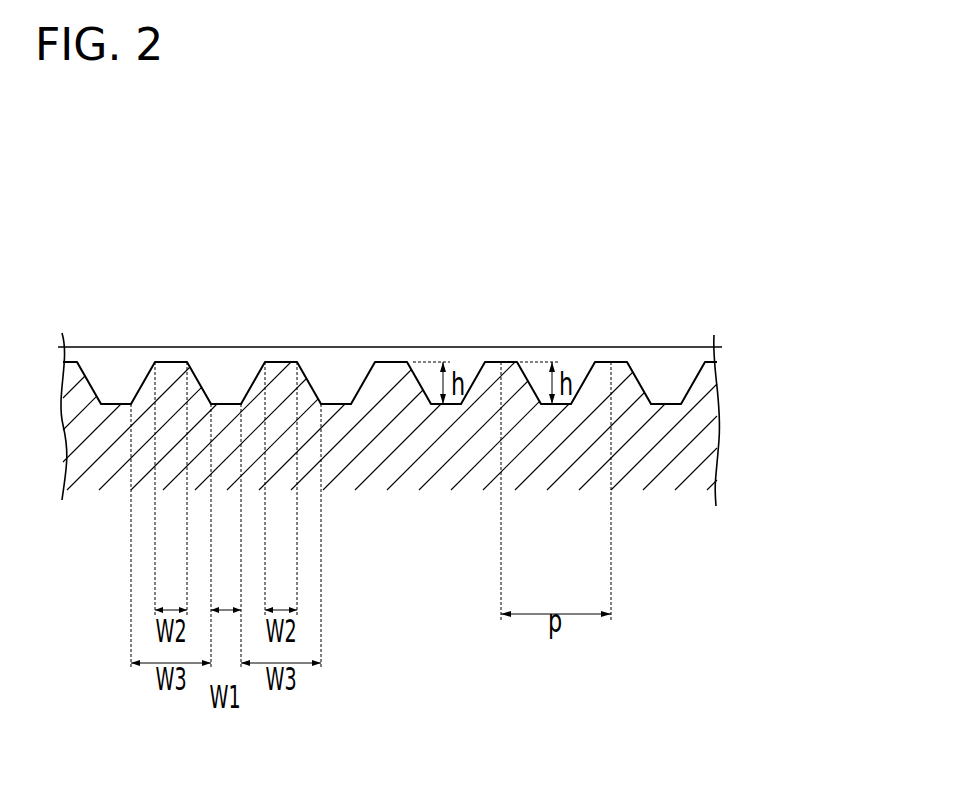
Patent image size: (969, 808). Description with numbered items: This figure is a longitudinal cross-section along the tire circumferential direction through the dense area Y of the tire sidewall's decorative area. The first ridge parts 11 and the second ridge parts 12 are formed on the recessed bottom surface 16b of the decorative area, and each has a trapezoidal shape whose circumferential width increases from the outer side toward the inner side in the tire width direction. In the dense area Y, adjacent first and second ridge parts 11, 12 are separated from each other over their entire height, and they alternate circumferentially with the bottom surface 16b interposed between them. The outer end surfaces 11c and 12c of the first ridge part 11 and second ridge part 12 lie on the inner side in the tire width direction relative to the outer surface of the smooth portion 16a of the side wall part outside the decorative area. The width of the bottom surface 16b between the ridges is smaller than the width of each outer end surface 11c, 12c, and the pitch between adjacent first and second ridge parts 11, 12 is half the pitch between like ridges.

The first ridge part 11 is at (78, 350).
The second ridge part 12 is at (148, 350).
The outer end surface of the second ridge part 12c is at (173, 361).
The outer end surface of the first ridge part 11c is at (282, 361).
The bottom surface of the decorative area 16b is at (228, 403).
The smooth portion of the side wall part 16a is at (335, 347).
The dense area Y is at (719, 186).